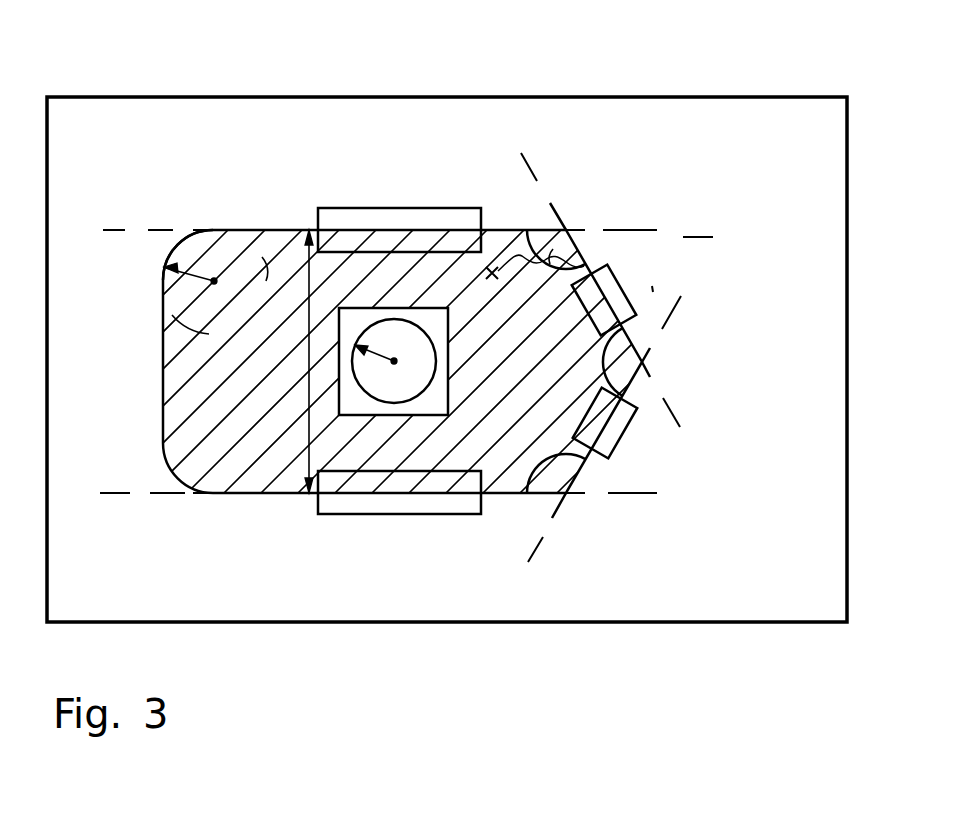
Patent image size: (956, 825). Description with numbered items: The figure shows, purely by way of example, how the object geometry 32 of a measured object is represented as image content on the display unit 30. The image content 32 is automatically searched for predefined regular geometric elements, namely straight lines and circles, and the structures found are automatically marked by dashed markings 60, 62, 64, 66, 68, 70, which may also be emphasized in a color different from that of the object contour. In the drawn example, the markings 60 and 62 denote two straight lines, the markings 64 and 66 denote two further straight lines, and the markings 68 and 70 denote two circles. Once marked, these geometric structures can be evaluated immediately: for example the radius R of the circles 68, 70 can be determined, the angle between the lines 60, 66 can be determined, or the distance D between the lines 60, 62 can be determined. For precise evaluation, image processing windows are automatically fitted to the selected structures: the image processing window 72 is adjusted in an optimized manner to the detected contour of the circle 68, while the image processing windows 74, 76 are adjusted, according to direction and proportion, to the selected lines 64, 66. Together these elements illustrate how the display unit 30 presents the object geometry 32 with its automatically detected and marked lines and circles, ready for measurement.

The display unit 30 is at (192, 128).
The object geometry 32 is at (258, 408).
The dashed marking (straight line) 60 is at (620, 230).
The dashed marking (straight line) 62 is at (630, 494).
The dashed marking (straight line) 64 is at (673, 319).
The dashed marking (straight line) 66 is at (676, 401).
The dashed marking (circle) 68 is at (430, 388).
The dashed marking (circle) 70 is at (163, 343).
The image processing window 72 is at (449, 317).
The image processing window 74 is at (618, 283).
The image processing window 76 is at (626, 428).